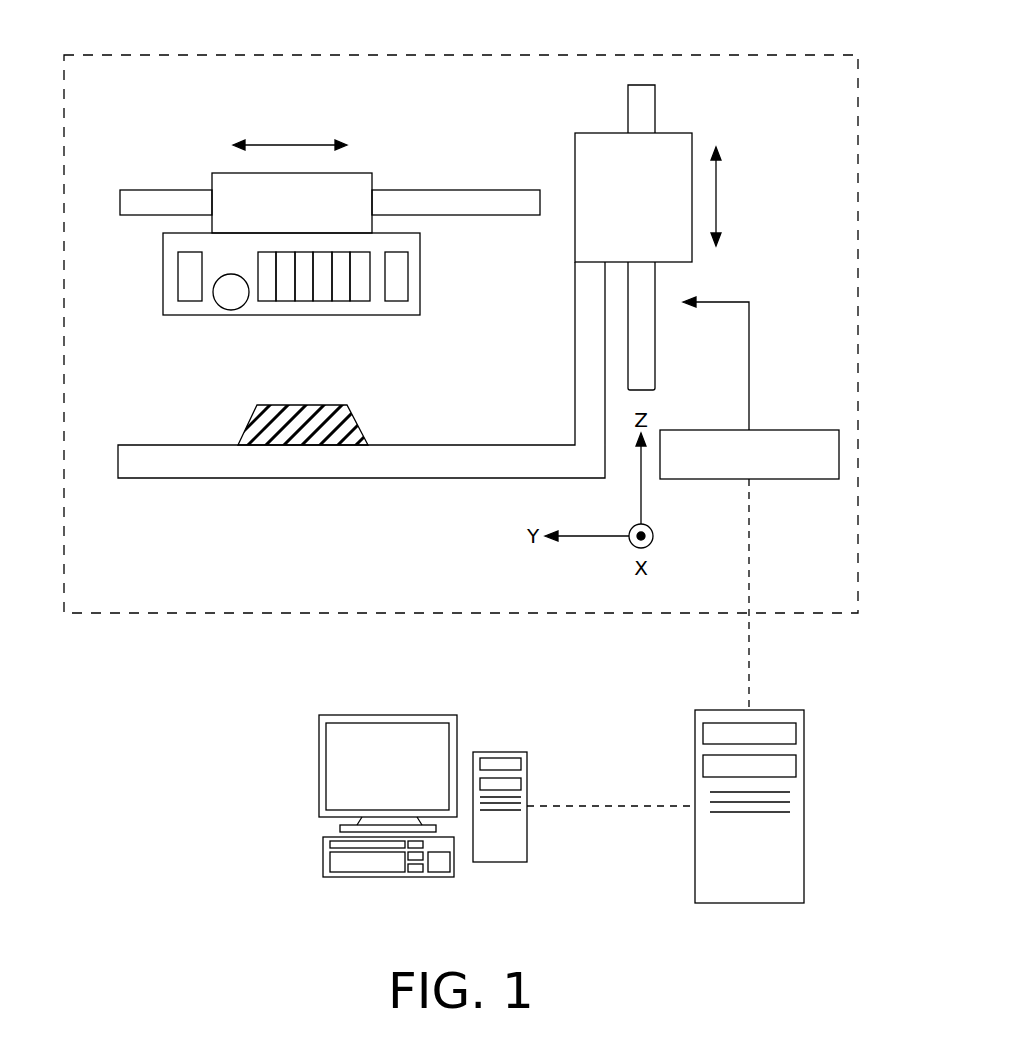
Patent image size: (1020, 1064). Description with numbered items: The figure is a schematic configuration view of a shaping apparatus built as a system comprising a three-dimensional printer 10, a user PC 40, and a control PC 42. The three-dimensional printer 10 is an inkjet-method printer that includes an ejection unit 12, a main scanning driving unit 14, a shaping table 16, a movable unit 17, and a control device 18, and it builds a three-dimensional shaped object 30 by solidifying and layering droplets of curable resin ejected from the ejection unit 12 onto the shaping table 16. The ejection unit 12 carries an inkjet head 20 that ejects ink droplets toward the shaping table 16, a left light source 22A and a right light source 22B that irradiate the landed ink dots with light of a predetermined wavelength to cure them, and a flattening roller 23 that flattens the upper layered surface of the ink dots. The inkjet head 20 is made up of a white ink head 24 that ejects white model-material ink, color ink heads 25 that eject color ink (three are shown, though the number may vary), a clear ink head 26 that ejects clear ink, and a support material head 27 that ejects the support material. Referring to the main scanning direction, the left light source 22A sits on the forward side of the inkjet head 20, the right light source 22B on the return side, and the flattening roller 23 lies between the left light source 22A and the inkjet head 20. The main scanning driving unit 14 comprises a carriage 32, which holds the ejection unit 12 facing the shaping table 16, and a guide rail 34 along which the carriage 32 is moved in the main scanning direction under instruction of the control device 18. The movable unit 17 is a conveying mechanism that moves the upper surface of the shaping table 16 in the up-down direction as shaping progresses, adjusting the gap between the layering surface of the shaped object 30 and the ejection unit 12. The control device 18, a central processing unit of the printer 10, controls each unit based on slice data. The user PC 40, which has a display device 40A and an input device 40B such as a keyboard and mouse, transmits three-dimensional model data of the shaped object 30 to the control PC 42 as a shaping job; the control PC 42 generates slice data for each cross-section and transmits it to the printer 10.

The 3D printer 10 is at (462, 54).
The ejection unit 12 is at (150, 276).
The main scanning driving unit 14 is at (434, 126).
The shaping table 16 is at (360, 468).
The movable unit 17 is at (680, 136).
The control device 18 is at (800, 429).
The inkjet head 20 is at (323, 328).
The left light source 22A is at (188, 301).
The right light source 22B is at (397, 301).
The flattening roller 23 is at (220, 307).
The white ink head 24 is at (266, 301).
The color ink head 25 is at (272, 301).
The clear ink head 26 is at (345, 301).
The support material head 27 is at (374, 307).
The shaped object 30 is at (367, 428).
The carriage 32 is at (373, 186).
The guide rail 34 is at (503, 190).
The user PC 40 is at (507, 776).
The display device 40A is at (387, 730).
The input device 40B is at (388, 870).
The control PC 42 is at (775, 710).